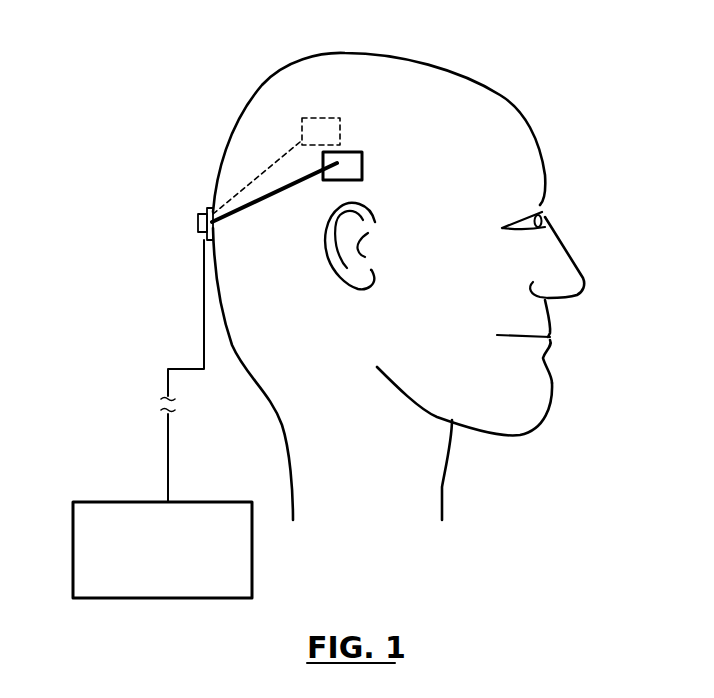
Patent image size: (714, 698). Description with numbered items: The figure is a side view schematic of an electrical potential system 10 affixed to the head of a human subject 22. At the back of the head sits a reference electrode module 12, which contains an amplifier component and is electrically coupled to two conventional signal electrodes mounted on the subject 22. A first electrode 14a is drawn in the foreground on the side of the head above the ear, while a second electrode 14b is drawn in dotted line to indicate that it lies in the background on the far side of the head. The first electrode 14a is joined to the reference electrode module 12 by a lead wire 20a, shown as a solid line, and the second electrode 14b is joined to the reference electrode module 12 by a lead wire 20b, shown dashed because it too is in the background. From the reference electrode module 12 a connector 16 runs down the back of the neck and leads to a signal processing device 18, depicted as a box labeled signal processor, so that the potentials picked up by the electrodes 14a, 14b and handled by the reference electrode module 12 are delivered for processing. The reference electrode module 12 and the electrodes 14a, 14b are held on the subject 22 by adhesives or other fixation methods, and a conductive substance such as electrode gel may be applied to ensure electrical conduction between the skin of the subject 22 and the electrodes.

The electrical potential system 10 is at (202, 136).
The reference electrode module 12 is at (209, 205).
The first electrode 14a is at (345, 150).
The second electrode 14b is at (320, 118).
The connector 16 is at (200, 333).
The signal processing device 18 is at (252, 577).
The lead wire 20a is at (252, 204).
The lead wire 20b is at (247, 183).
The subject 22 is at (522, 125).